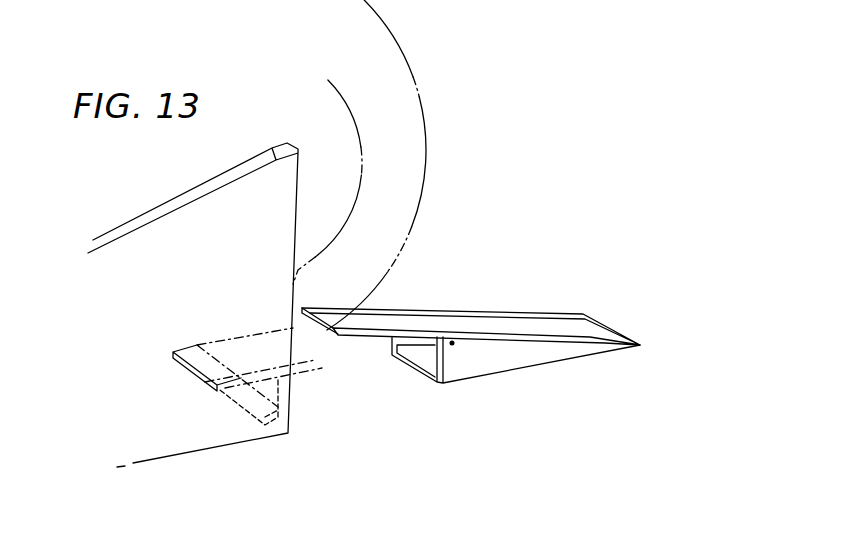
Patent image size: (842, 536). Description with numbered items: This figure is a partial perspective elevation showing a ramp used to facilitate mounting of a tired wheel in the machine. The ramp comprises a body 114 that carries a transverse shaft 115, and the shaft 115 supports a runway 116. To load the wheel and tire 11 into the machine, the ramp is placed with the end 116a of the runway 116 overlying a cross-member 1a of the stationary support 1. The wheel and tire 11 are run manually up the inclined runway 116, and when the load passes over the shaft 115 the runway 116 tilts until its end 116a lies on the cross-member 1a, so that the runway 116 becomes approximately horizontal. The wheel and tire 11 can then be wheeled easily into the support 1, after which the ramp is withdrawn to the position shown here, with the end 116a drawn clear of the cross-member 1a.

The wall / housing panel 1 is at (225, 456).
The support bar on wall 1a is at (191, 336).
The arcuate path 11 is at (412, 53).
The bracket 114 is at (487, 365).
The fastener 115 is at (452, 343).
The plate 116 is at (483, 323).
The plate tip 116a is at (252, 360).